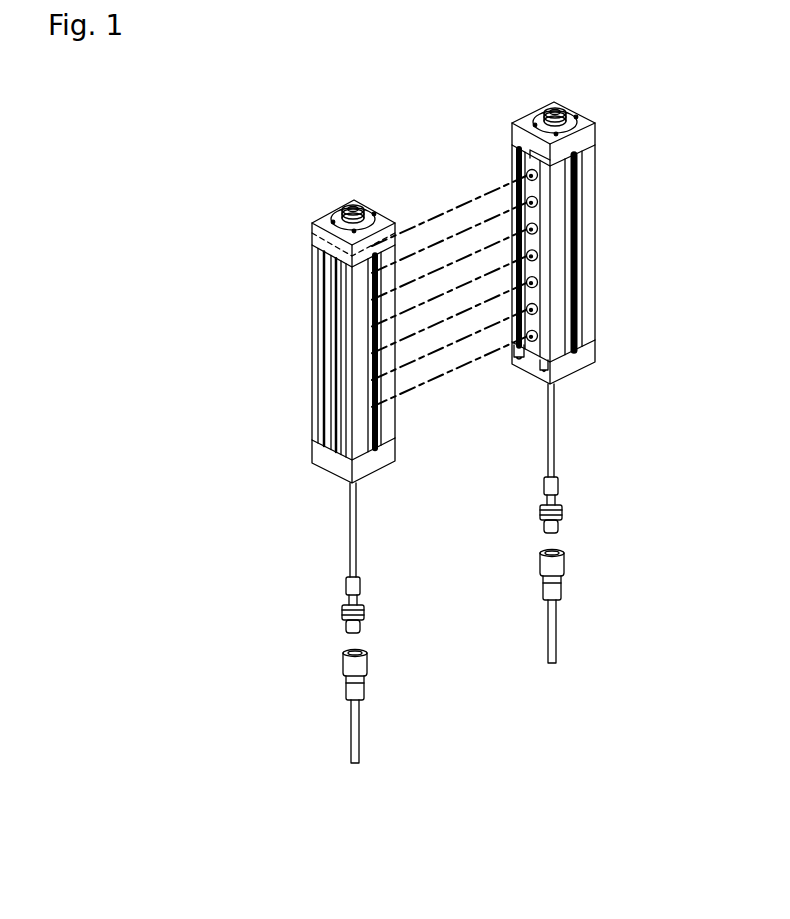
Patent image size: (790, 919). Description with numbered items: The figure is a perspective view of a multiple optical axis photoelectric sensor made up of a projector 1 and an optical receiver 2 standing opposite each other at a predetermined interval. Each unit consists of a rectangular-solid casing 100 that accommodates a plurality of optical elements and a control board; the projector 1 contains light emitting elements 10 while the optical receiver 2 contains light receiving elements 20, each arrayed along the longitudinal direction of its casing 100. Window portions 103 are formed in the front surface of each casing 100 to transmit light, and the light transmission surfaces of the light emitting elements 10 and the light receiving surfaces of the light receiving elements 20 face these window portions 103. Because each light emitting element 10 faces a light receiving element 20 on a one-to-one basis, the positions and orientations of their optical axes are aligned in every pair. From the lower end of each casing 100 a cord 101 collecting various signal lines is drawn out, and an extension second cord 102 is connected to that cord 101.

The projector 1 is at (317, 323).
The optical receiver 2 is at (569, 223).
The light emitting element 10 is at (312, 233).
The light receiving element 20 is at (541, 192).
The casing 100 is at (313, 350).
The cord 101 is at (350, 527).
The second cord 102 is at (351, 729).
The window portion 103 is at (543, 297).